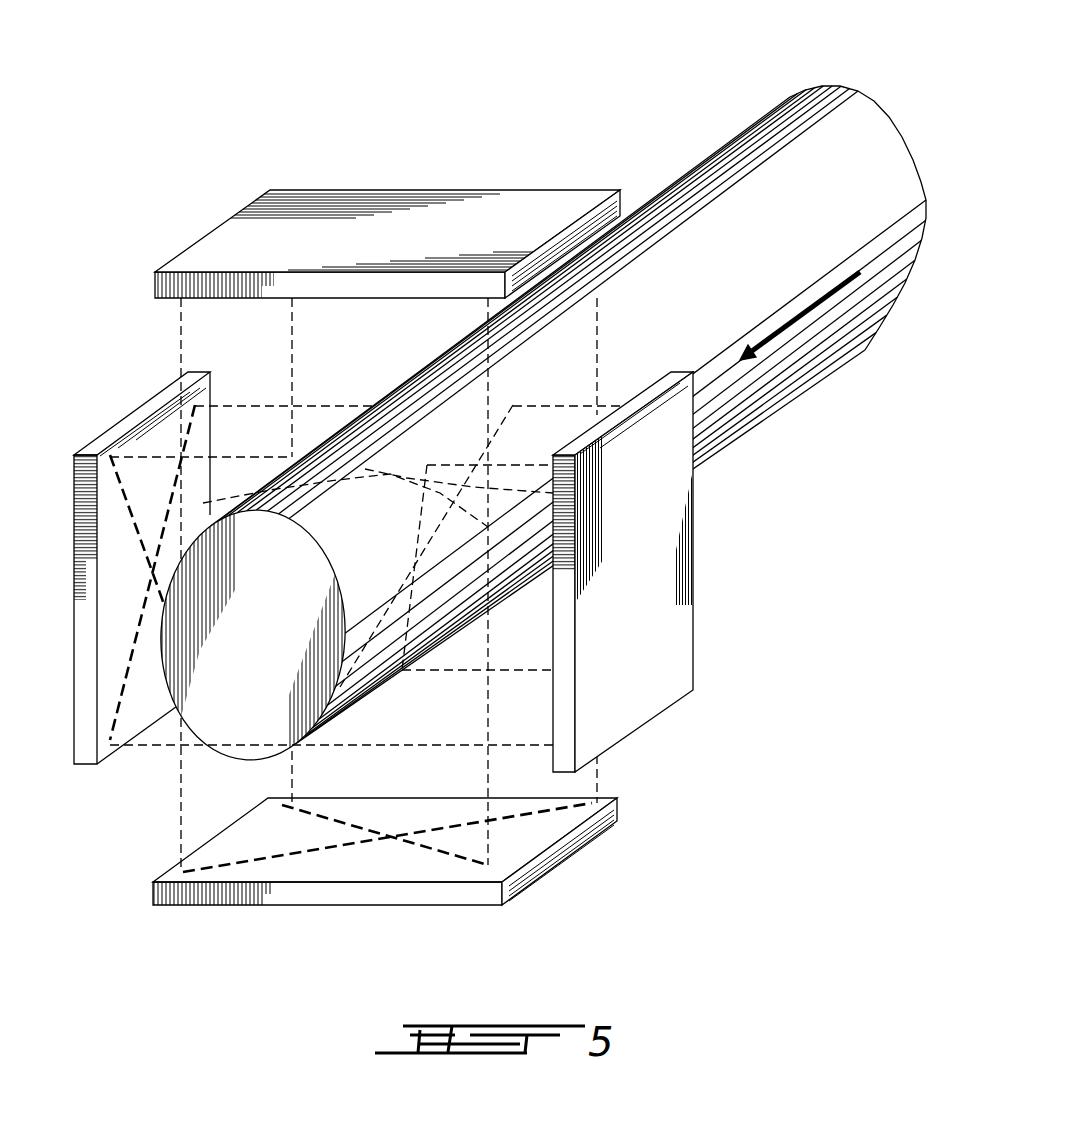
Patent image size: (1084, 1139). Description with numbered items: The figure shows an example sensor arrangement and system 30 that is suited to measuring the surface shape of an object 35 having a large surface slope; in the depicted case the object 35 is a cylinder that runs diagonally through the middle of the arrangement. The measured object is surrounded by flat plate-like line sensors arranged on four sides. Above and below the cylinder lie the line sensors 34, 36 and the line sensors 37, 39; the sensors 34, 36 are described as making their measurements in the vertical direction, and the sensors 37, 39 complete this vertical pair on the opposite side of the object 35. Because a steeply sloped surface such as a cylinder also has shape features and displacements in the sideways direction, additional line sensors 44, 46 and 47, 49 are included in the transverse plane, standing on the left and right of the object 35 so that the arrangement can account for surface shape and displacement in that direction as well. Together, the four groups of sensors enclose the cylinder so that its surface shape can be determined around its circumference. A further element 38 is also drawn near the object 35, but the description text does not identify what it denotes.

The sensor arrangement and system 30 is at (488, 468).
The line sensor 34 is at (387, 203).
The line sensor 36 is at (390, 218).
The object 35 is at (871, 123).
The line sensor 37 is at (416, 853).
The magnetization direction arrow 38 is at (797, 322).
The line sensor 39 is at (560, 862).
The line sensor 44 is at (130, 561).
The line sensor 46 is at (112, 433).
The line sensor 47 is at (681, 572).
The line sensor 49 is at (672, 578).